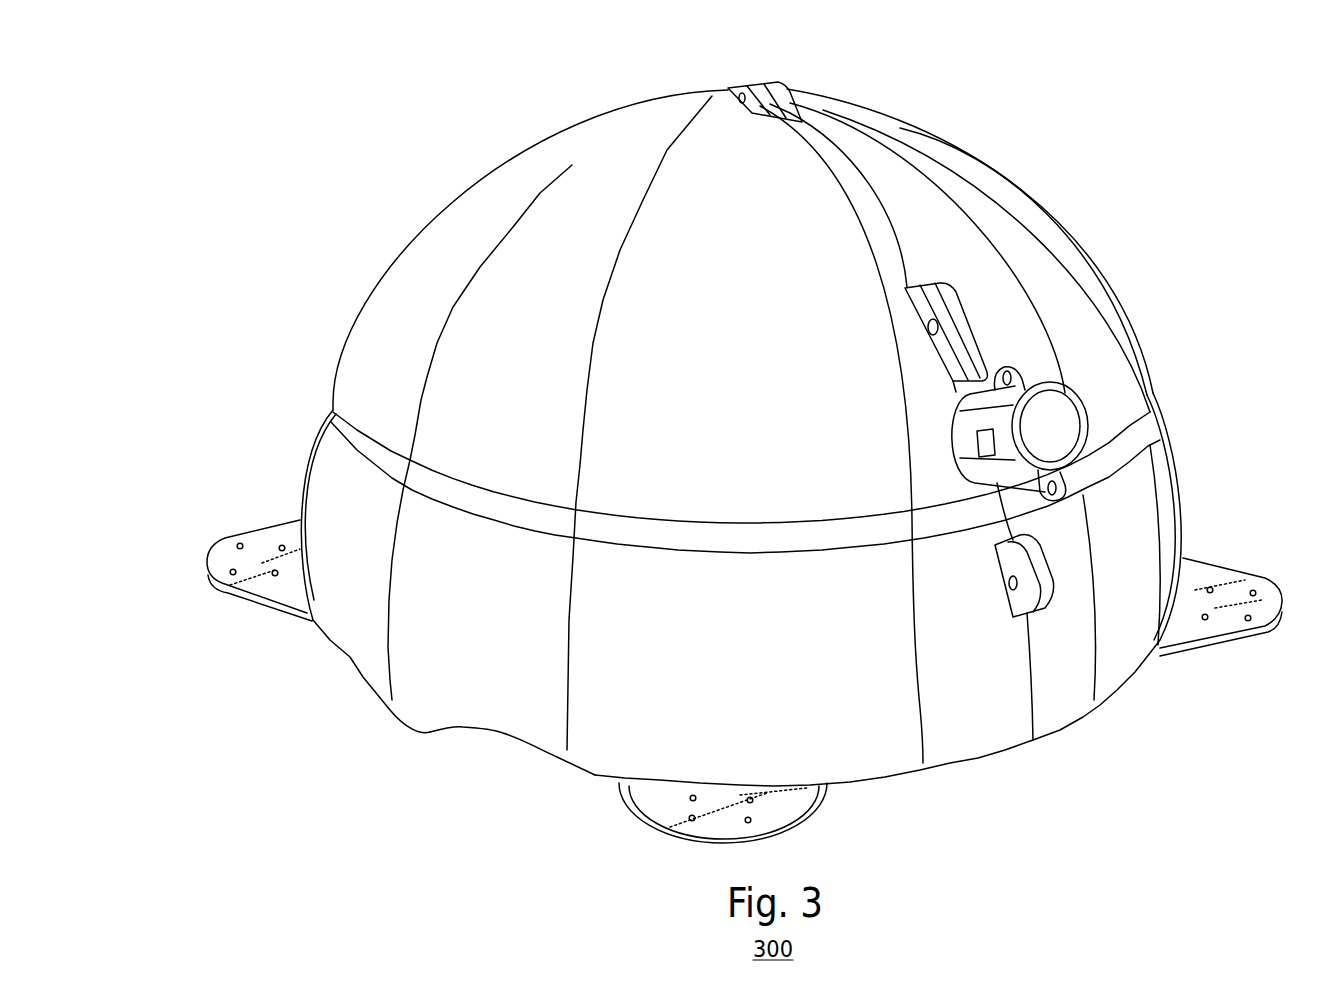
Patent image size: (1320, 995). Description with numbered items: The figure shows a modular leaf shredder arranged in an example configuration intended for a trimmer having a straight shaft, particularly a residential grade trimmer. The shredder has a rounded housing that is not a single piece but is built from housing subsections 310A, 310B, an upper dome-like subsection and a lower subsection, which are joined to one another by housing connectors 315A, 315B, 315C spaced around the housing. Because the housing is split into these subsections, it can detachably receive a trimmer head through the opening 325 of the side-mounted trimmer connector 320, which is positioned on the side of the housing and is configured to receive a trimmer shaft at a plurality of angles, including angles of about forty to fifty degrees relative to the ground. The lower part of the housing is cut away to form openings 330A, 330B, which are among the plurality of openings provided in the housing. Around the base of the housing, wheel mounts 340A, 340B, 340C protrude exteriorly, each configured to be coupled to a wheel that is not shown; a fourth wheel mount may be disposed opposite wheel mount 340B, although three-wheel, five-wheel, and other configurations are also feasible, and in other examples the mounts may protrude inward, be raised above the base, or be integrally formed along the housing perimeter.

The housing subsection 310A is at (975, 765).
The housing subsection 310B is at (1177, 440).
The housing connector 315A is at (1056, 583).
The housing connector 315B is at (972, 312).
The housing connector 315C is at (778, 87).
The trimmer connector 320 is at (1067, 387).
The opening 325 is at (1020, 428).
The opening 330A is at (505, 737).
The opening 330B is at (352, 652).
The wheel mount 340A is at (1217, 652).
The wheel mount 340B is at (653, 826).
The wheel mount 340C is at (240, 608).